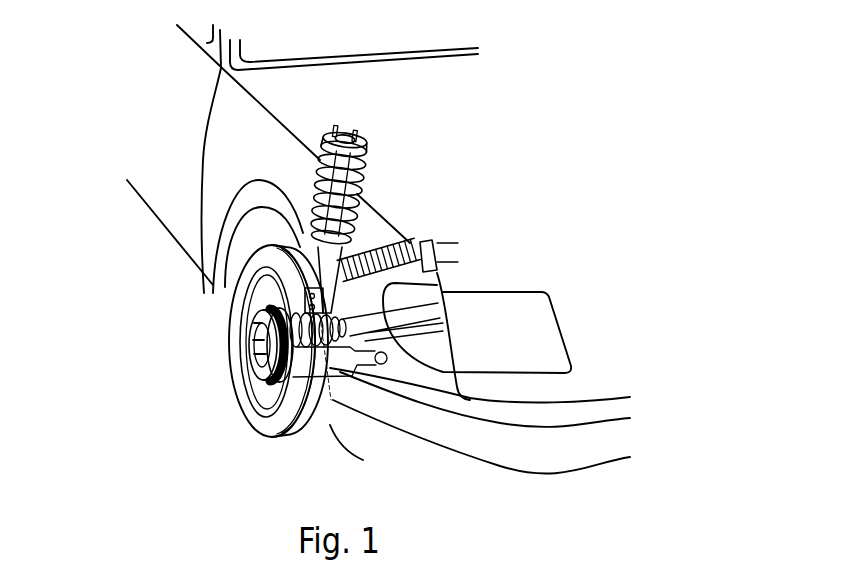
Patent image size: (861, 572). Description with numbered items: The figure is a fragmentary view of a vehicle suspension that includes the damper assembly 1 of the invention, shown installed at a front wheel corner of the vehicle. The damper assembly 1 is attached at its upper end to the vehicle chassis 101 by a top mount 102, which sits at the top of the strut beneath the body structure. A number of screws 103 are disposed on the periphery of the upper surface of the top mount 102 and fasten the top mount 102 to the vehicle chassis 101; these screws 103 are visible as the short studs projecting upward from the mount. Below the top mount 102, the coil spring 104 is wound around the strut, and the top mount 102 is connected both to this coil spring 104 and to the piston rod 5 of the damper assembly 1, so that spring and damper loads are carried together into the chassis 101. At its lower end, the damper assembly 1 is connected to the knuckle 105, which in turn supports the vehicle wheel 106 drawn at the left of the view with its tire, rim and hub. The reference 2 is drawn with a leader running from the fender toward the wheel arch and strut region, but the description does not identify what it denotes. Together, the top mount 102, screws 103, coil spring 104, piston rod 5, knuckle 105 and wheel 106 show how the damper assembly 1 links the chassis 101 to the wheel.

The damper assembly 1 is at (362, 238).
The wheel suspension 2 is at (300, 228).
The piston rod 5 is at (358, 198).
The vehicle chassis 101 is at (218, 80).
The top mount 102 is at (367, 152).
The screws 103 is at (362, 137).
The coil spring 104 is at (363, 180).
The knuckle 105 is at (300, 298).
The vehicle wheel 106 is at (262, 412).